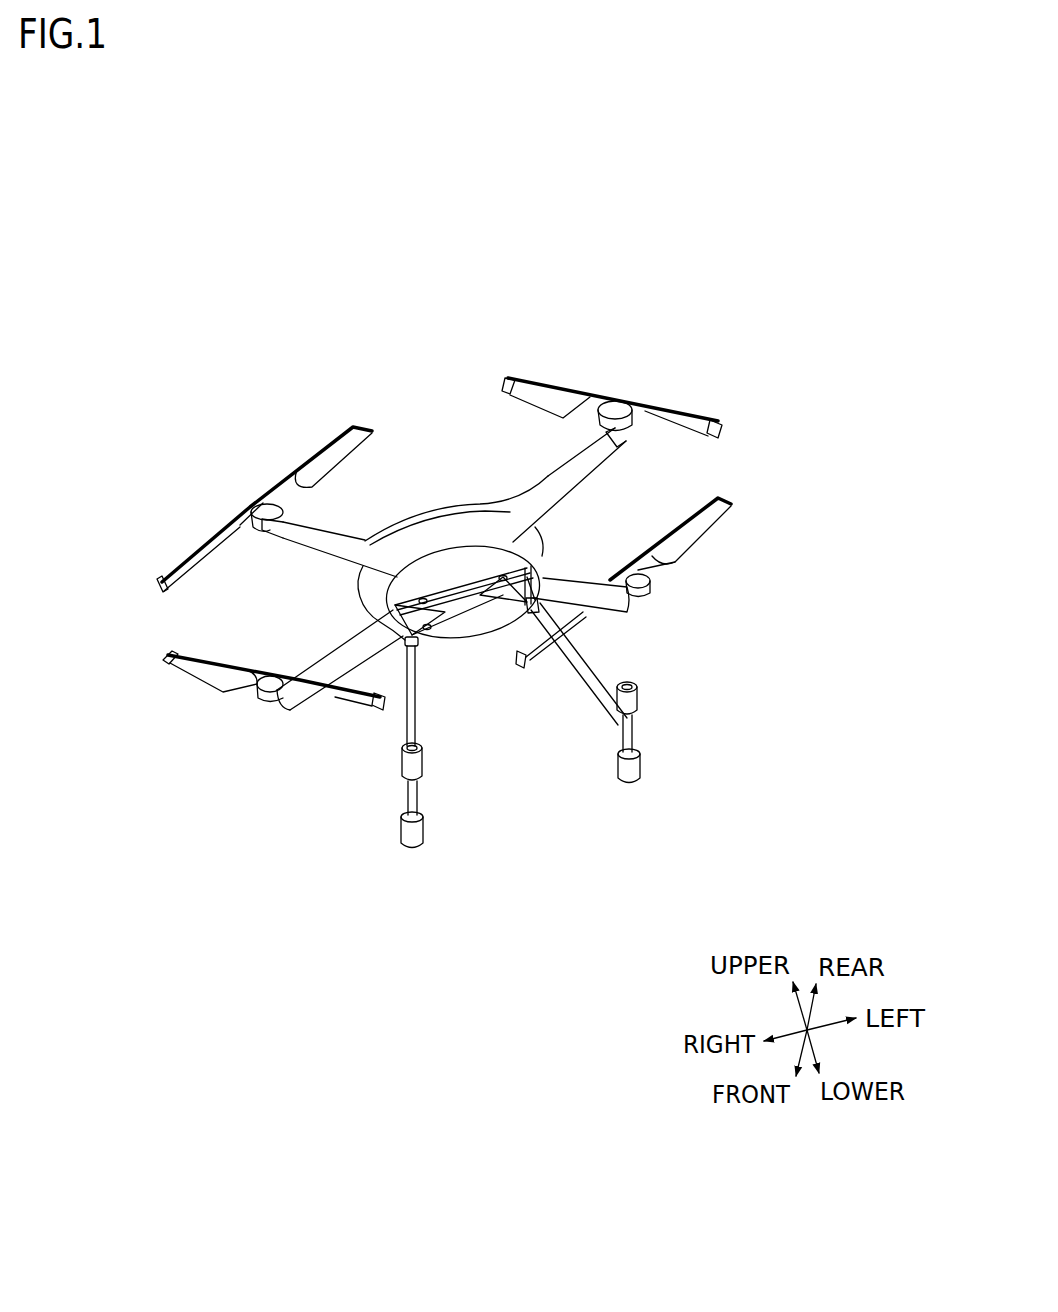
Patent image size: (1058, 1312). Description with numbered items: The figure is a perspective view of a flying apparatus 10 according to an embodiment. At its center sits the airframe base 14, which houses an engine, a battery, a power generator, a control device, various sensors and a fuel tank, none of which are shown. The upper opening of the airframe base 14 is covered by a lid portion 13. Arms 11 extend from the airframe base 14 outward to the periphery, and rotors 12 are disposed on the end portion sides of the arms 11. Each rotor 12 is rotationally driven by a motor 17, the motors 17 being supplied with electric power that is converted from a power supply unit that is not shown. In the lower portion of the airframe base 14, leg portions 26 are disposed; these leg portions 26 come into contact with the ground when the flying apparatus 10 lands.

The flying apparatus 10 is at (433, 364).
The arm 11 is at (548, 474).
The rotor 12 is at (562, 382).
The lid portion 13 is at (455, 500).
The airframe base 14 is at (462, 557).
The motor 17 is at (620, 432).
The leg portion 26 is at (590, 645).